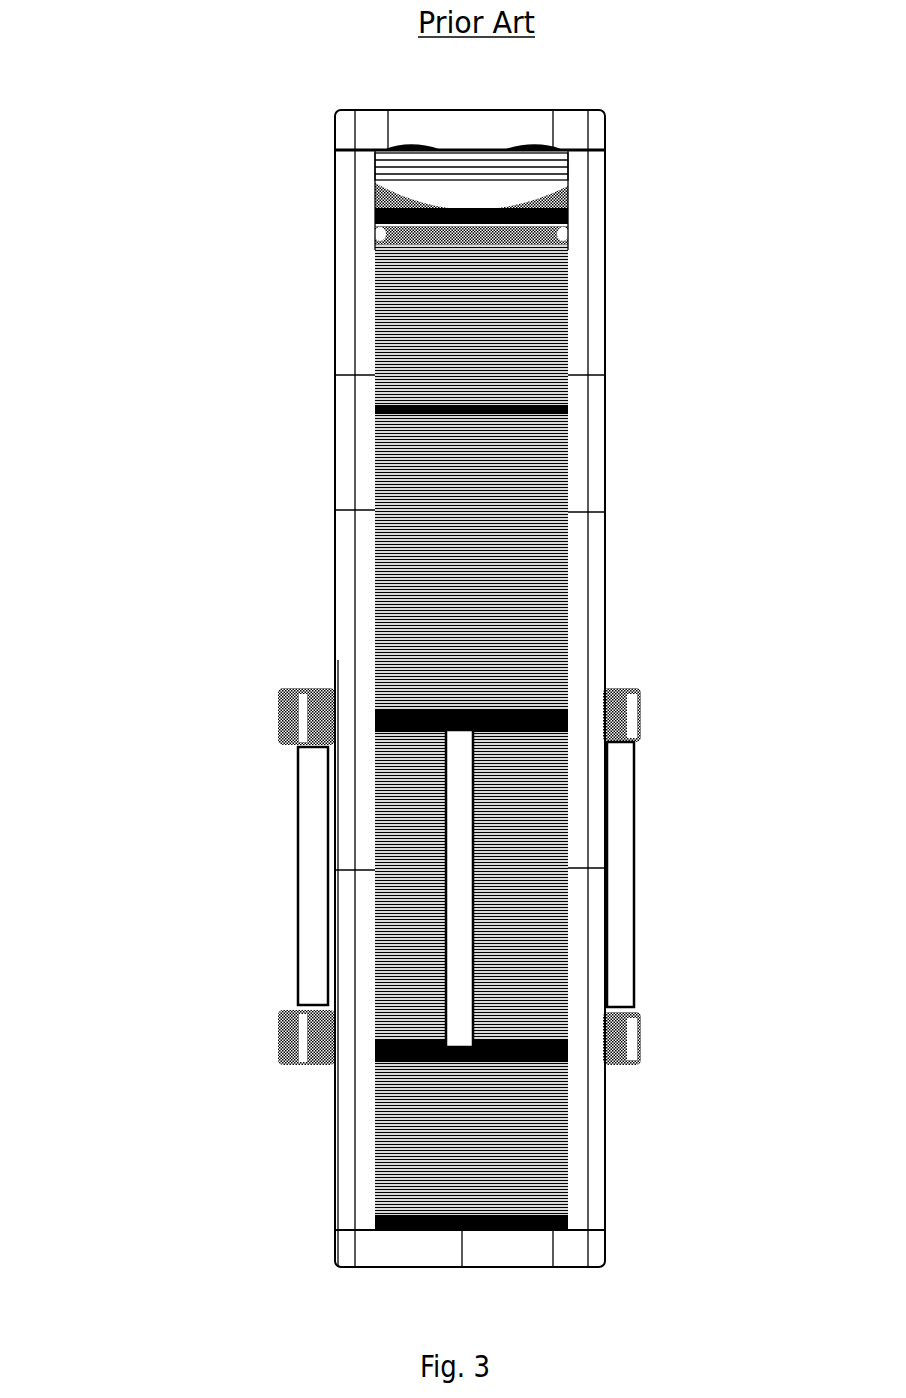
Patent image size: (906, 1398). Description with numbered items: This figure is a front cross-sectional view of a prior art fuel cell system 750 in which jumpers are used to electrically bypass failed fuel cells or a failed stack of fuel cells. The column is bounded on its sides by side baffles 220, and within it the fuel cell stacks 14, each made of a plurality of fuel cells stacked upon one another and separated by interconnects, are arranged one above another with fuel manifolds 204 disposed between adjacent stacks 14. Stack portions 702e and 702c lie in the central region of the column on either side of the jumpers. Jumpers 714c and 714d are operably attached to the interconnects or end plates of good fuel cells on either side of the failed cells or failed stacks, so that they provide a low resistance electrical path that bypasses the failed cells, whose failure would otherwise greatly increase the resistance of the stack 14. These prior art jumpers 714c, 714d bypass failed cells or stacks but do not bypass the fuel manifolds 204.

The prior art fuel cell system 750 is at (157, 345).
The fuel cell stack 14 is at (552, 622).
The fuel manifold 204 is at (390, 722).
The jumper 714c is at (298, 820).
The jumper 714d is at (447, 933).
The cell sub-stack 702e is at (556, 833).
The cell sub-stack 702c is at (537, 990).
The side baffle 220 is at (335, 1200).